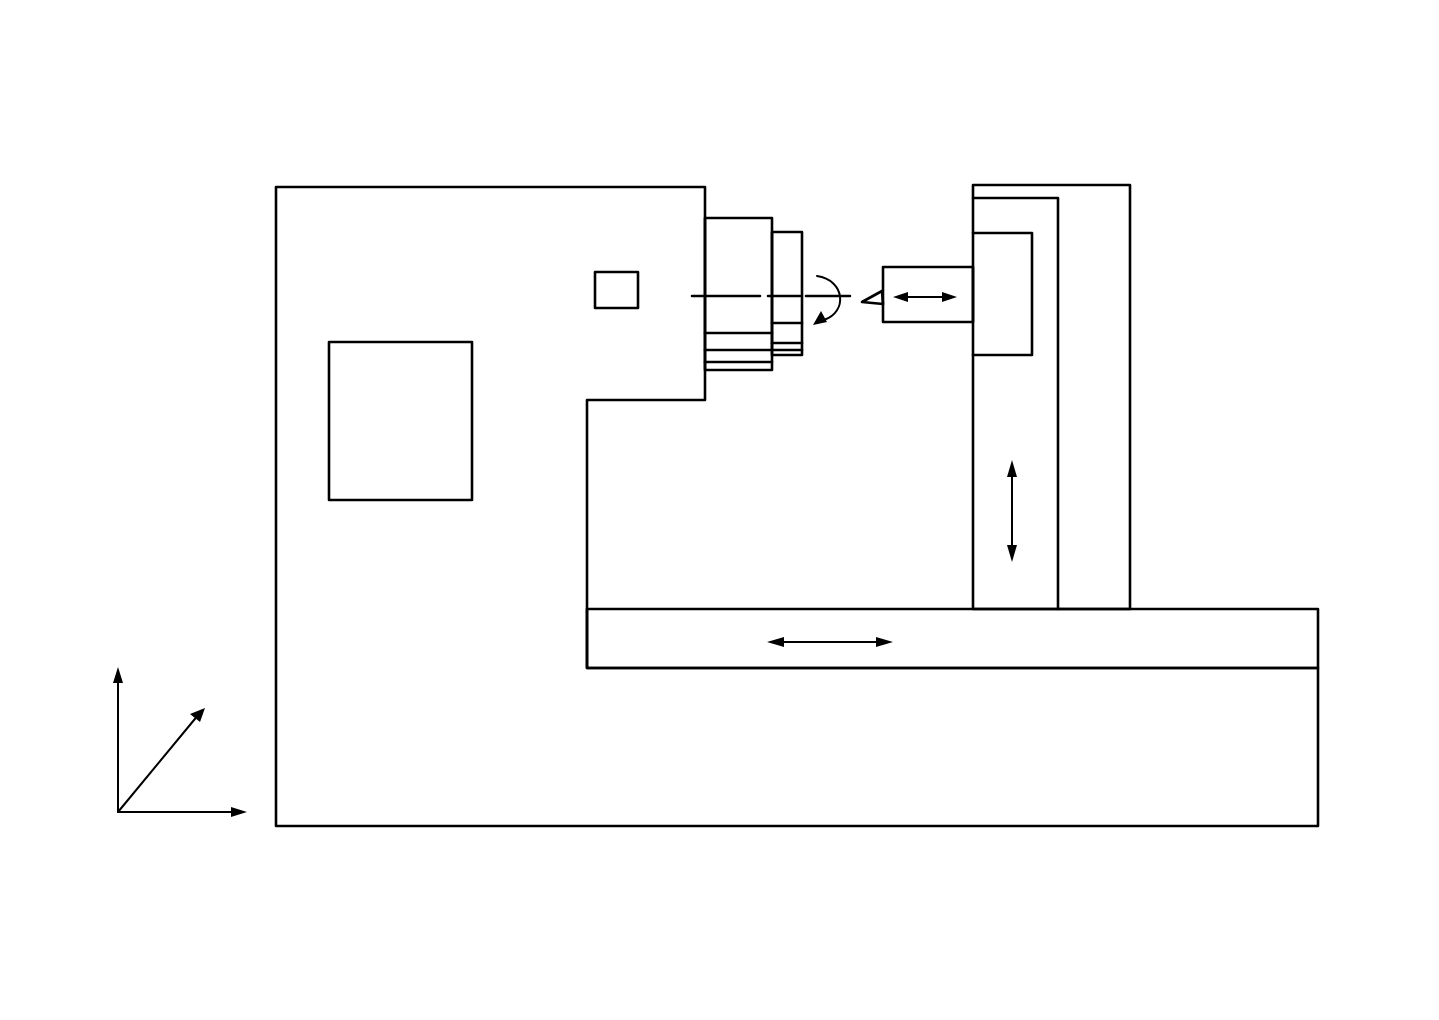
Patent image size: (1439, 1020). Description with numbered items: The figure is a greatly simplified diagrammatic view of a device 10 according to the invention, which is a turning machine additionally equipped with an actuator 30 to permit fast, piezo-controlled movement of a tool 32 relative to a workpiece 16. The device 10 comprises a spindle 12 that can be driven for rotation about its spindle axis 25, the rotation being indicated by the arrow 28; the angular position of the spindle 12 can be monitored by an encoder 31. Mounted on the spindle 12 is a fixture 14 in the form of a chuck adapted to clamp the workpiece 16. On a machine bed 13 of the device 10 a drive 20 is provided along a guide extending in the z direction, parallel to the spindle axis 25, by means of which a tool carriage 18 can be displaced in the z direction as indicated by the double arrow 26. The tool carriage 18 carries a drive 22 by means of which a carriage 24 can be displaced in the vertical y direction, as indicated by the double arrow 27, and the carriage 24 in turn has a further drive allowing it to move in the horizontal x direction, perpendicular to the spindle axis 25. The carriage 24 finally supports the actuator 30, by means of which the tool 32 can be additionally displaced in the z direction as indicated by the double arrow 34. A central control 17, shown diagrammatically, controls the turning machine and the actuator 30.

The device 10 is at (1197, 141).
The spindle 12 is at (724, 186).
The machine bed 13 is at (1272, 728).
The fixture 14 is at (740, 238).
The workpiece 16 is at (788, 248).
The central control 17 is at (355, 383).
The tool carriage 18 is at (1146, 297).
The drive 20 is at (700, 632).
The drive 22 is at (1043, 455).
The carriage 24 is at (1005, 255).
The spindle axis 25 is at (733, 294).
The double arrow 26 is at (827, 640).
The double arrow 27 is at (1012, 508).
The arrow 28 is at (820, 273).
The actuator 30 is at (940, 248).
The encoder 31 is at (613, 282).
The tool 32 is at (865, 306).
The double arrow 34 is at (922, 298).